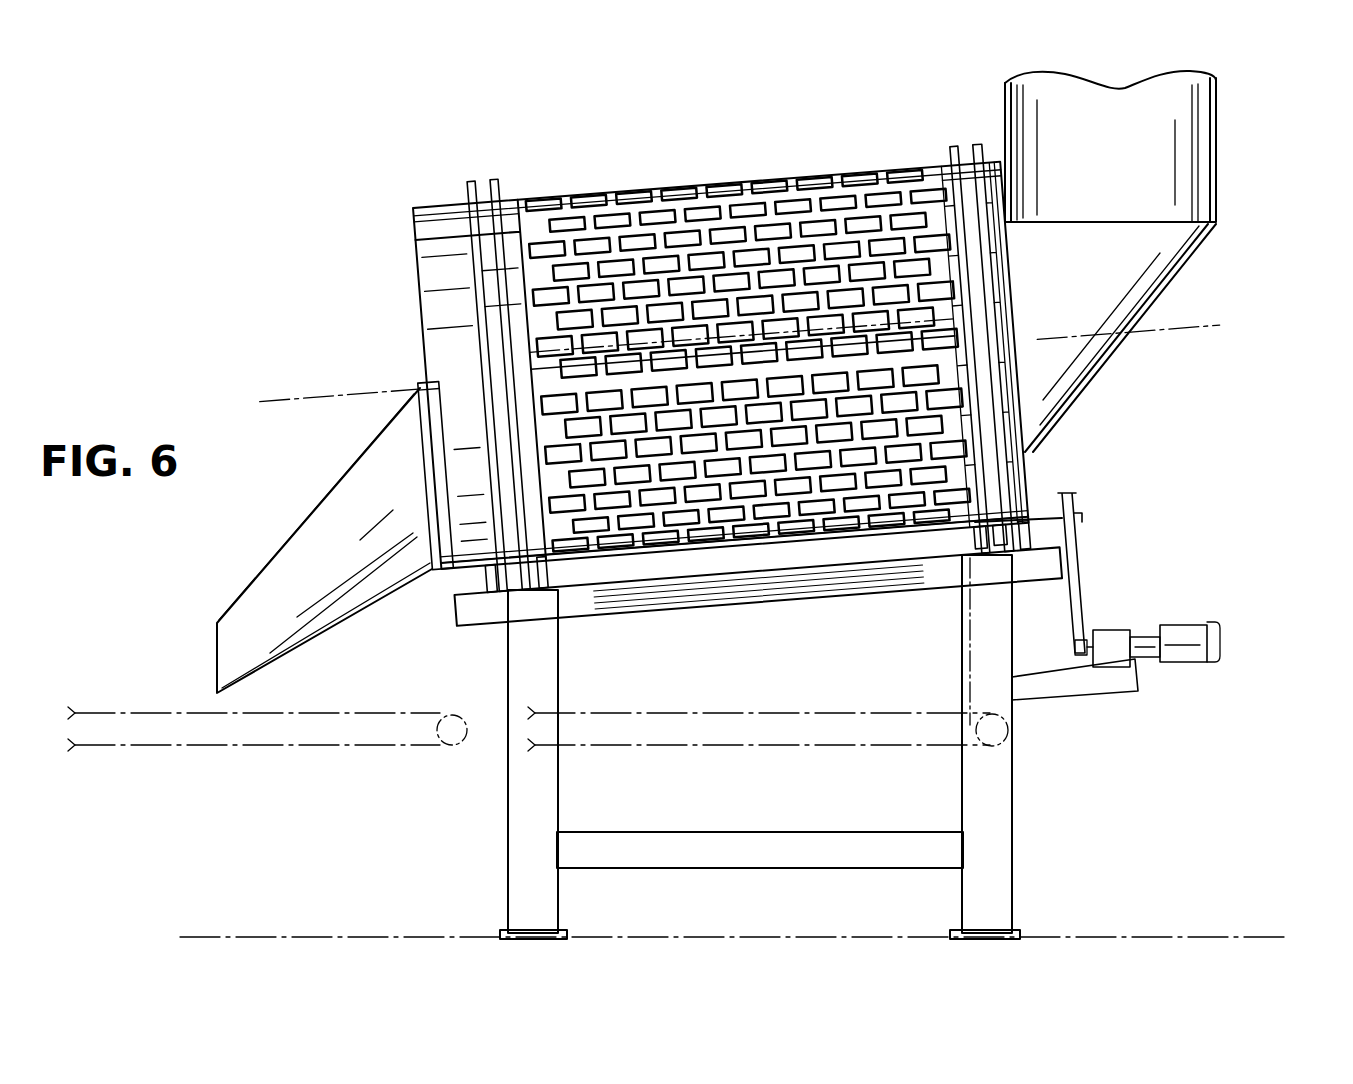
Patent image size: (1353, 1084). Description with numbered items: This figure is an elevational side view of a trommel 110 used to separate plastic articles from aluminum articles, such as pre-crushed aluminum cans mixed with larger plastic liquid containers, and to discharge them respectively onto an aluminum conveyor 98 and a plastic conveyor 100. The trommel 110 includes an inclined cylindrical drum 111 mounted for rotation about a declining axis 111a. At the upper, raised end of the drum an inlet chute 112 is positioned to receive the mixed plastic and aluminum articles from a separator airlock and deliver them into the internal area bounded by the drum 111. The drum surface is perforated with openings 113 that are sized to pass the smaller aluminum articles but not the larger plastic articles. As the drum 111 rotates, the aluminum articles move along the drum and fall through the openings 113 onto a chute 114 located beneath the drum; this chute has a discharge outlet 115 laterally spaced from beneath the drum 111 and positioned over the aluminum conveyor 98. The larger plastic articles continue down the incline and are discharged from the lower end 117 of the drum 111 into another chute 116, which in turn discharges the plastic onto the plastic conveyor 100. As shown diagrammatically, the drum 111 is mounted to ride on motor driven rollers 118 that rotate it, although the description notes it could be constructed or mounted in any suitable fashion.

The trommel 110 is at (272, 297).
The cylindrical drum 111 is at (410, 238).
The declining axis 111a is at (375, 392).
The inlet chute 112 is at (1200, 244).
The openings 113 is at (688, 240).
The chute 114 is at (550, 653).
The discharge outlet 115 is at (760, 693).
The chute 116 is at (236, 640).
The lower end 117 is at (538, 330).
The motor driven rollers 118 is at (1030, 475).
The aluminum conveyor 98 is at (617, 710).
The plastic conveyor 100 is at (178, 695).